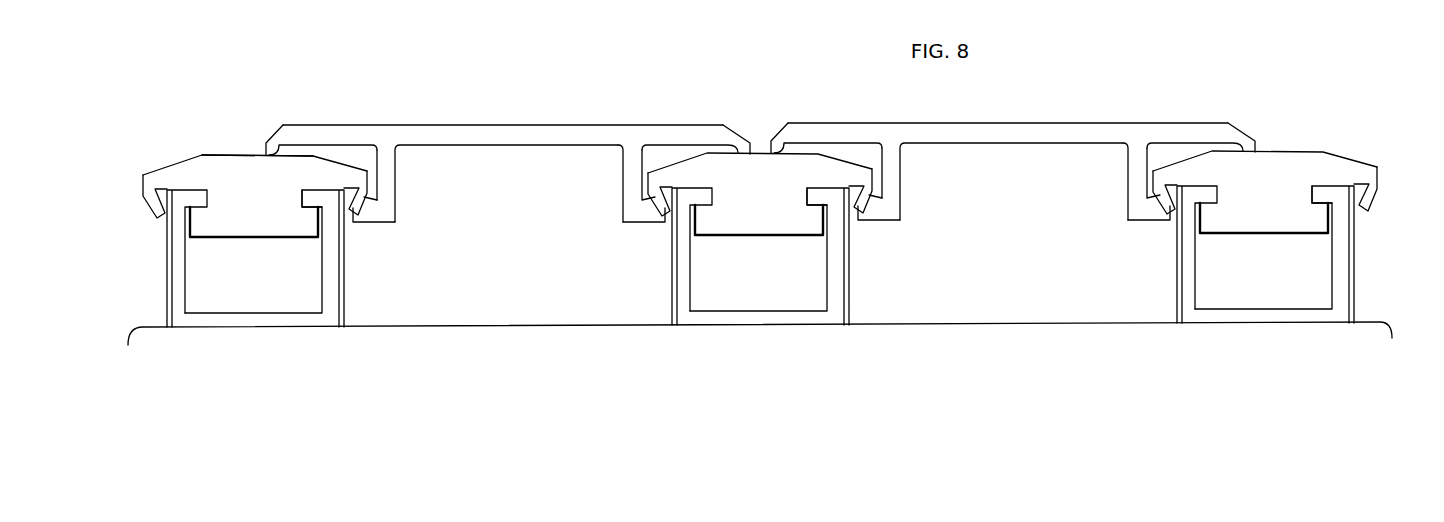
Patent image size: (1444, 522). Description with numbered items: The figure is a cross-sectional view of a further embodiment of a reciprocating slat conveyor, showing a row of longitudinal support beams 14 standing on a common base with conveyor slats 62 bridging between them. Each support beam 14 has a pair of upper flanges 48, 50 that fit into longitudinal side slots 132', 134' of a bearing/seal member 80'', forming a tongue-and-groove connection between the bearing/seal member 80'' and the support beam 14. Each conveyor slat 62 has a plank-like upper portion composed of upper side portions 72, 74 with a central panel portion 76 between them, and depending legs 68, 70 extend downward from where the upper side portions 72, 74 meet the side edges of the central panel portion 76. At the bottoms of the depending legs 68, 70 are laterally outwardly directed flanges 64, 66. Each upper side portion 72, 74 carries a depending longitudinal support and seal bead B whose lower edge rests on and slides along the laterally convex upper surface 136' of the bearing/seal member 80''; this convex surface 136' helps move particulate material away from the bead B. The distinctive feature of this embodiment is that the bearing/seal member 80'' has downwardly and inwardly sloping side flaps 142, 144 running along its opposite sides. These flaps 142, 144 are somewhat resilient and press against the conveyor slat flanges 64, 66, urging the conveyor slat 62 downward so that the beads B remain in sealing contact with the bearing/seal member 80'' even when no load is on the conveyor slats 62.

The longitudinal support beam 14 is at (275, 328).
The upper flange 48 is at (772, 166).
The upper flange 50 is at (323, 188).
The conveyor slat 62 is at (760, 169).
The laterally outwardly directed flange 64 is at (396, 223).
The laterally outwardly directed flange 66 is at (643, 226).
The depending leg 68 is at (396, 163).
The depending leg 70 is at (623, 172).
The upper side portion 72 is at (312, 125).
The upper side portion 74 is at (696, 131).
The central panel portion 76 is at (443, 125).
The bearing/seal member 80'' is at (759, 241).
The longitudinal side slot 132' is at (705, 256).
The longitudinal side slot 134' is at (769, 256).
The laterally convex upper surface 136' is at (760, 128).
The side flap 142 is at (153, 212).
The side flap 144 is at (368, 198).
The support and seal bead B is at (266, 152).